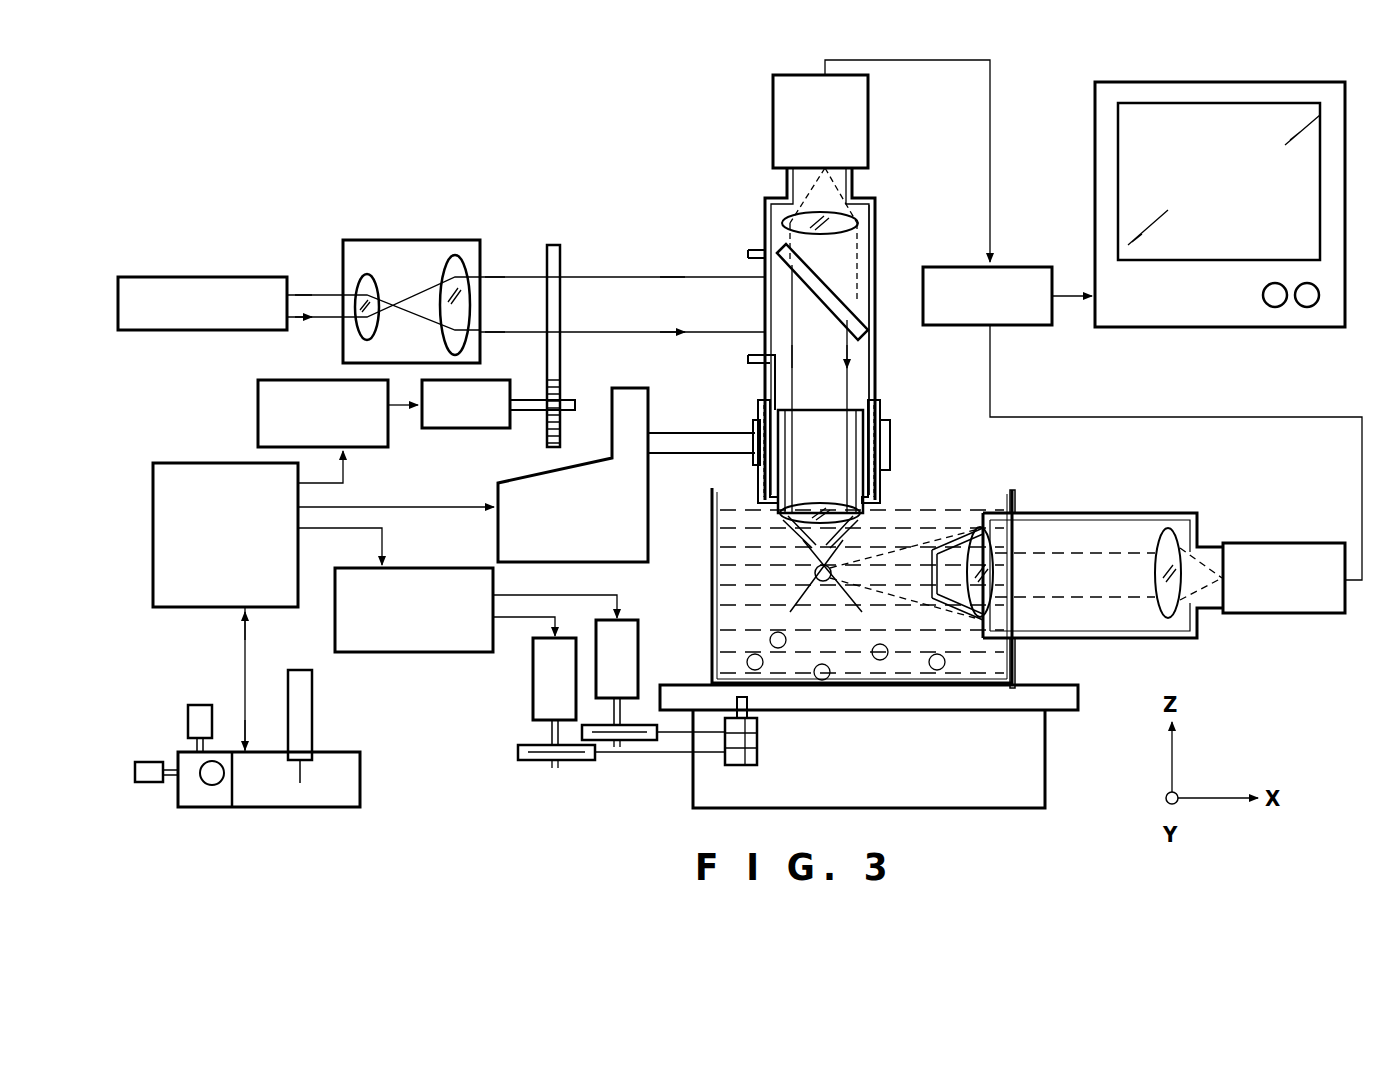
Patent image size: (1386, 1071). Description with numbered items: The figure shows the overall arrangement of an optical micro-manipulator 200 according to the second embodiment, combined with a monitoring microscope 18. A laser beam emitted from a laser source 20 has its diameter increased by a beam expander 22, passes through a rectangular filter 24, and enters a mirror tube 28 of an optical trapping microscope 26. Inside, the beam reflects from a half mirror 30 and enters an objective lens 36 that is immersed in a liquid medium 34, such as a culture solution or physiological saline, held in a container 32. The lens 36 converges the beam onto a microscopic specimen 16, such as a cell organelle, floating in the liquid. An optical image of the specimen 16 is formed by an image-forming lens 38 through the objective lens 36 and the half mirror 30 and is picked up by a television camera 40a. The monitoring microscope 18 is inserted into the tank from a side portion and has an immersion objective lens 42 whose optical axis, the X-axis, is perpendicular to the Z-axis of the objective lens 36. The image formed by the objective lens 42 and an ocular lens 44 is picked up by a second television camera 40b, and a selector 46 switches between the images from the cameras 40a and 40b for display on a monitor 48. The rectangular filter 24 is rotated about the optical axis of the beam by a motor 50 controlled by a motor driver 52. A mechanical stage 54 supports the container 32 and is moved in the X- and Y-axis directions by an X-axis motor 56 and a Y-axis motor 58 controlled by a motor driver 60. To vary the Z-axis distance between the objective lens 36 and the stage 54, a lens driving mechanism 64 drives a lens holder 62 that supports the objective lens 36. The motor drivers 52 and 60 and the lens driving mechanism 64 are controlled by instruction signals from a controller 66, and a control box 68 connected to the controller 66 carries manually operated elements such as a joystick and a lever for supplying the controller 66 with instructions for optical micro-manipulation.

The micro-manipulator 200 is at (663, 198).
The microscopic specimen 16 is at (826, 585).
The monitoring microscope 18 is at (1050, 513).
The laser source 20 is at (222, 277).
The beam expander 22 is at (415, 240).
The rectangular filter 24 is at (557, 245).
The optical trapping microscope 26 is at (878, 205).
The mirror tube 28 is at (878, 266).
The half mirror 30 is at (866, 325).
The container 32 is at (710, 542).
The liquid medium 34 is at (712, 602).
The objective lens 36 is at (822, 510).
The image-forming lens 38 is at (822, 234).
The television camera 40a is at (868, 105).
The television camera 40b is at (1258, 543).
The objective lens 42 is at (965, 605).
The ocular lens 44 is at (1195, 628).
The selector 46 is at (1018, 267).
The monitor 48 is at (1250, 82).
The motor 50 is at (452, 428).
The motor driver 52 is at (258, 392).
The mechanical stage 54 is at (1045, 685).
The X-axis motor 56 is at (533, 680).
The Y-axis motor 58 is at (625, 622).
The motor driver 60 is at (420, 568).
The lens holder 62 is at (753, 488).
The lens driving mechanism 64 is at (652, 398).
The controller 66 is at (222, 463).
The control box 68 is at (330, 752).